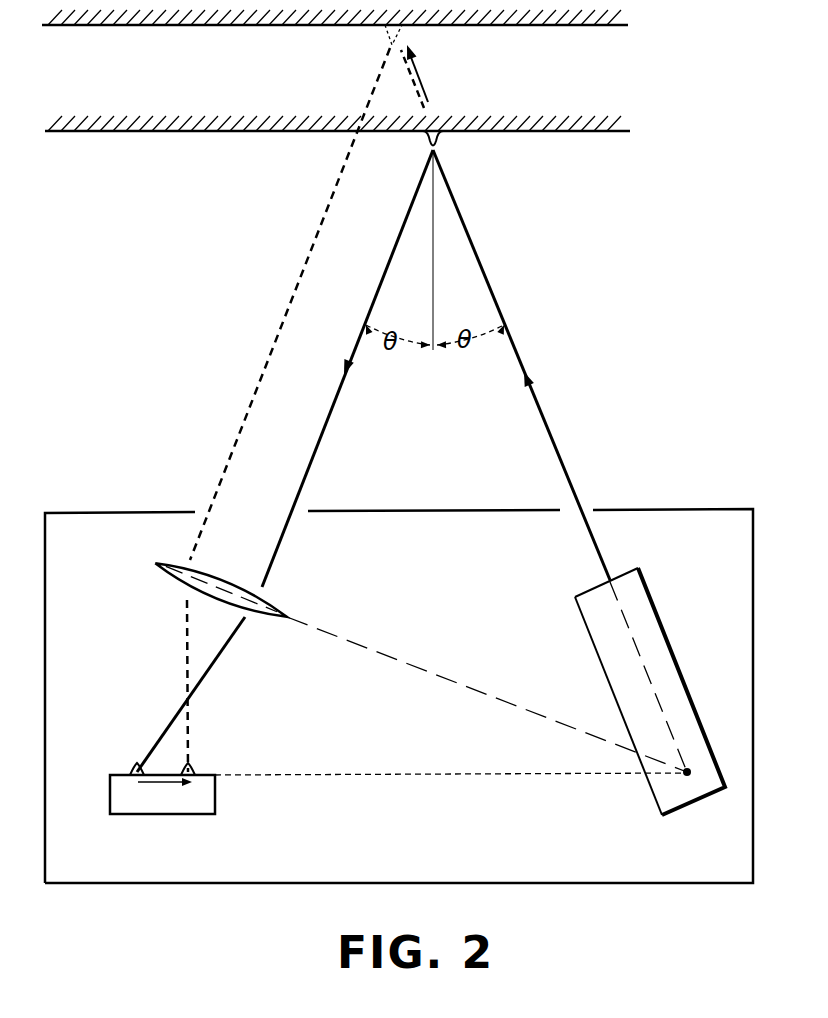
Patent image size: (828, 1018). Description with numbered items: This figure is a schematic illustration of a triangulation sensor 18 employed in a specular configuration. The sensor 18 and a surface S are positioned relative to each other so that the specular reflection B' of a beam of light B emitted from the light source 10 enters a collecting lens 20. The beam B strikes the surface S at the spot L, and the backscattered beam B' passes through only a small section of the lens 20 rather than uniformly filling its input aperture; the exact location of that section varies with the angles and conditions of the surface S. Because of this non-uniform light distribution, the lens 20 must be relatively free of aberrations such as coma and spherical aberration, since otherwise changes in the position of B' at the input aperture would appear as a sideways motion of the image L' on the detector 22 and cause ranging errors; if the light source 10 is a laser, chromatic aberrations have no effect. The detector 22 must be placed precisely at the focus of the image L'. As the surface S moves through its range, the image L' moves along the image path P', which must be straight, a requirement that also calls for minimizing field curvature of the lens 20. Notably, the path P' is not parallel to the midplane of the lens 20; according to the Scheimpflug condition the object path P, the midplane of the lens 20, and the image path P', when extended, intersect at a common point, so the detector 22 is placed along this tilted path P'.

The light source 10 is at (678, 658).
The sensor 18 is at (694, 505).
The collecting lens 20 is at (155, 563).
The detector 22 is at (193, 804).
The surface S is at (93, 132).
The element L is at (452, 156).
The object path P is at (431, 76).
The beam of light B is at (521, 365).
The specular reflection B' is at (285, 461).
The image L' is at (140, 754).
The image path P' is at (165, 794).